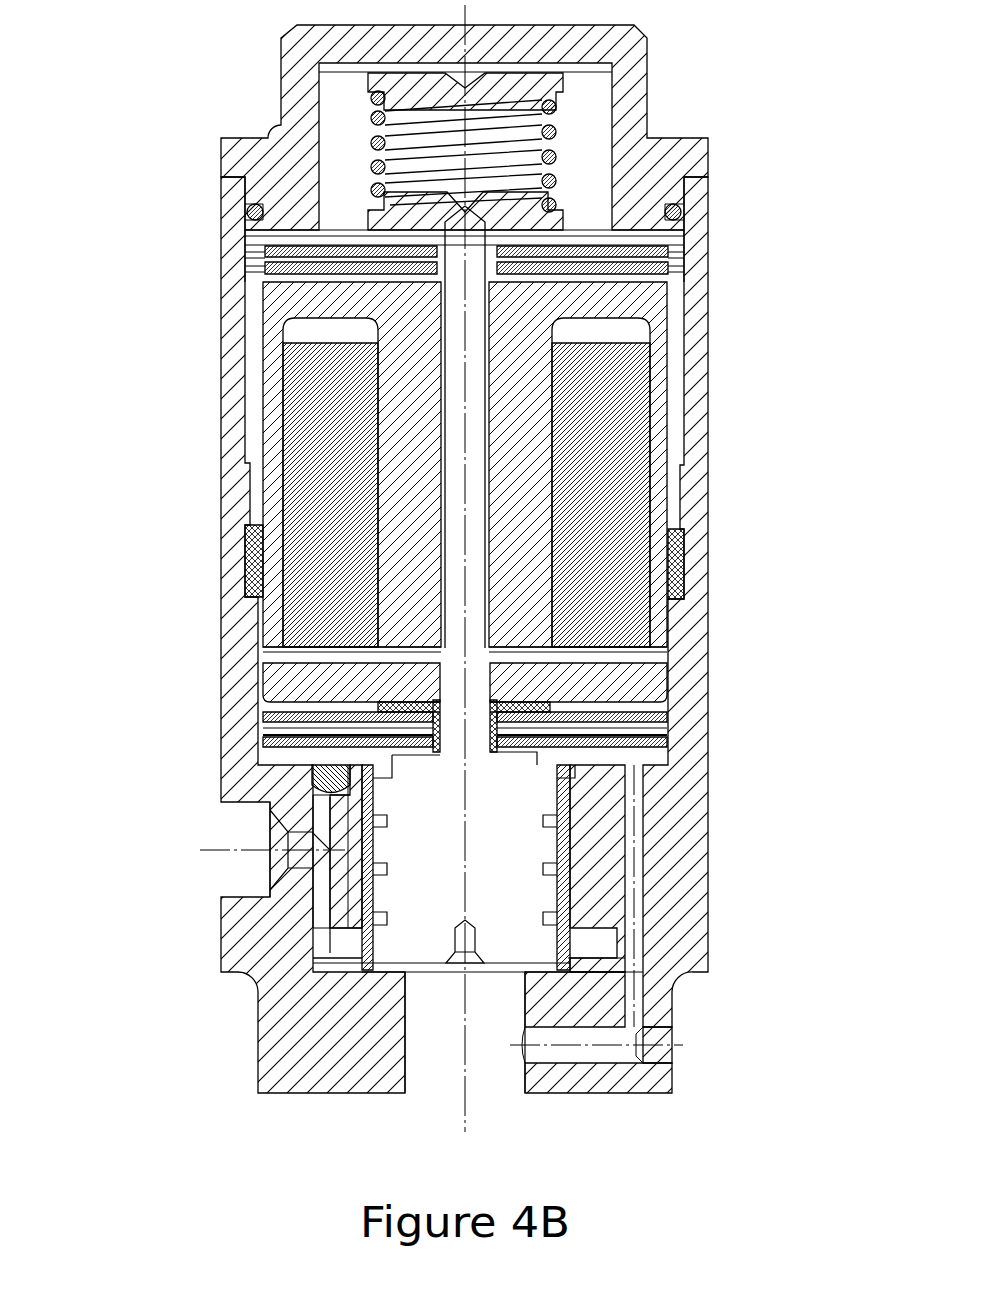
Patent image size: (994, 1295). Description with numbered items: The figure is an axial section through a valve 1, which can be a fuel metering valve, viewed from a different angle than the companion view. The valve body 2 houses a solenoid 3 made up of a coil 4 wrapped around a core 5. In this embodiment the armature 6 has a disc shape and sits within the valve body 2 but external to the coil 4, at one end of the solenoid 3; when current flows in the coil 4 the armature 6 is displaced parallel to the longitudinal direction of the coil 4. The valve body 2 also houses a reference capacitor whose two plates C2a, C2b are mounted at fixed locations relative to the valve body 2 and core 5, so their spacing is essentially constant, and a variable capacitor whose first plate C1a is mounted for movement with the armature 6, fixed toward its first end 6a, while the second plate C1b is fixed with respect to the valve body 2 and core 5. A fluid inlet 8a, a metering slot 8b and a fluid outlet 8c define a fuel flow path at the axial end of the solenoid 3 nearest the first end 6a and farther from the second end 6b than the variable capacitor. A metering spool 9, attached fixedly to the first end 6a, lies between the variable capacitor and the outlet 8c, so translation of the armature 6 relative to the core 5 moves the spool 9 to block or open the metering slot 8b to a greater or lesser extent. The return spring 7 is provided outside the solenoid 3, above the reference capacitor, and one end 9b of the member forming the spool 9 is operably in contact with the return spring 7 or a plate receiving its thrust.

The valve 1 is at (740, 60).
The valve body 2 is at (227, 217).
The solenoid 3 is at (150, 760).
The coil 4 is at (600, 493).
The core 5 is at (292, 293).
The armature 6 is at (262, 668).
The first end of the armature 6a is at (650, 703).
The second end of the armature 6b is at (636, 668).
The return spring 7 is at (520, 130).
The fluid inlet 8a is at (252, 842).
The metering slot 8b is at (350, 940).
The fluid outlet 8c is at (500, 1072).
The metering spool 9 is at (498, 884).
The end of the metering spool 9b is at (482, 228).
The first variable capacitor plate C1a is at (275, 716).
The second variable capacitor plate C1b is at (275, 742).
The first reference capacitor plate C2a is at (655, 250).
The second reference capacitor plate C2b is at (655, 268).